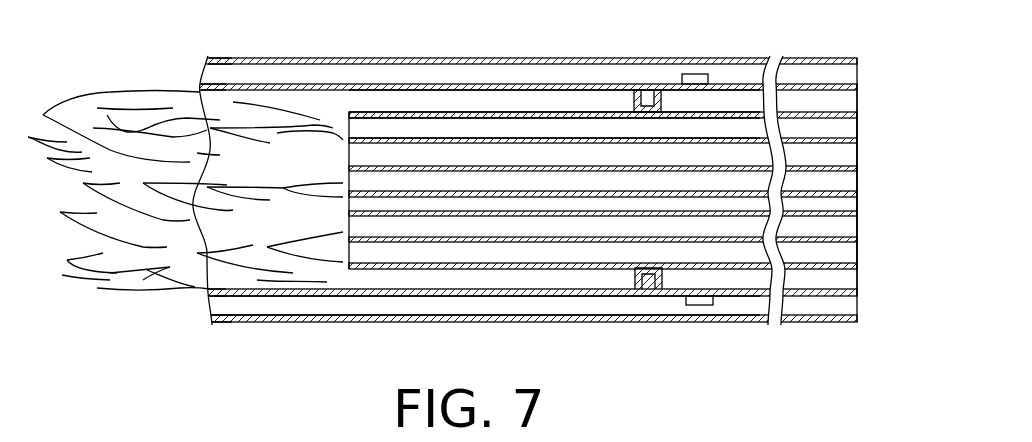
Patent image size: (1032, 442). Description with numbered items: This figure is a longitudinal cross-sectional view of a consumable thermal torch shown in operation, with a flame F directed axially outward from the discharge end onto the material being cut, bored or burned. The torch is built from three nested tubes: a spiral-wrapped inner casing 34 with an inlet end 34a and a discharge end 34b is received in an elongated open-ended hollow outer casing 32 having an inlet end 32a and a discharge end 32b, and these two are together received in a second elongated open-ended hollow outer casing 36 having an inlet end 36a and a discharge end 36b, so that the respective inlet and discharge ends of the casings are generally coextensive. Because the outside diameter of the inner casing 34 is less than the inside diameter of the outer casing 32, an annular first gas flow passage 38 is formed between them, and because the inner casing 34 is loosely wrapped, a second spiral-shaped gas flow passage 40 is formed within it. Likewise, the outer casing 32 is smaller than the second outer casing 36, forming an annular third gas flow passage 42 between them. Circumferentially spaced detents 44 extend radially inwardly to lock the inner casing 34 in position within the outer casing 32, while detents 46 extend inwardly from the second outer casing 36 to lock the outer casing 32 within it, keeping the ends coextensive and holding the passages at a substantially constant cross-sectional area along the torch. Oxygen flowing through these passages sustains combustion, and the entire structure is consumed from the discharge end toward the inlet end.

The flame F is at (120, 93).
The outer casing 32 is at (517, 210).
The inlet end of outer casing 32a is at (857, 87).
The discharge end of outer casing 32b is at (208, 290).
The spiral-wrapped inner casing 34 is at (617, 199).
The inlet end of inner casing 34a is at (860, 262).
The discharge end of inner casing 34b is at (349, 267).
The second outer casing 36 is at (538, 218).
The inlet end of second outer casing 36a is at (858, 319).
The discharge end of second outer casing 36b is at (210, 322).
The first gas flow passage 38 is at (440, 102).
The second spiral-shaped gas flow passage 40 is at (603, 128).
The third gas flow passage 42 is at (595, 305).
The detents 44 is at (667, 282).
The detents 46 is at (705, 298).